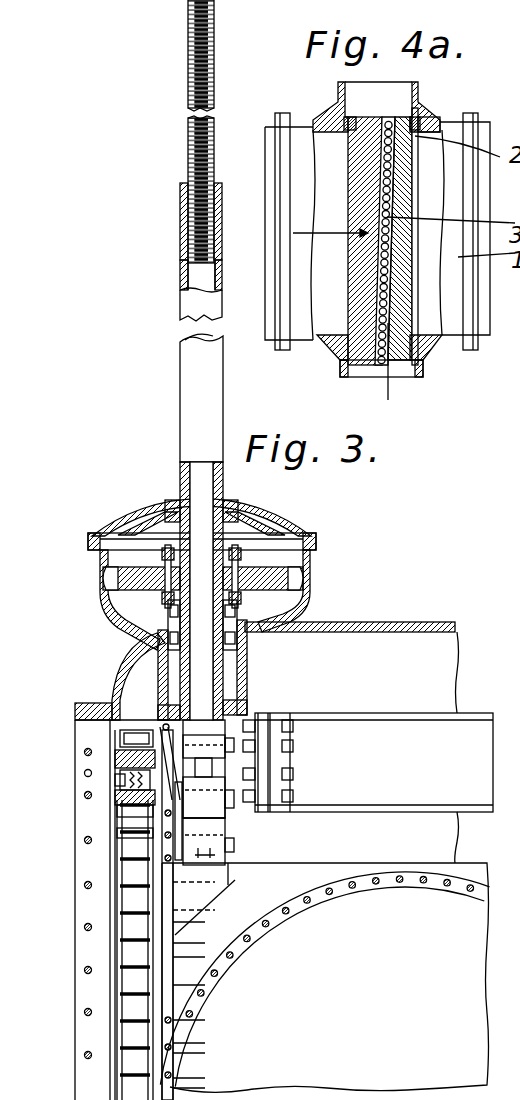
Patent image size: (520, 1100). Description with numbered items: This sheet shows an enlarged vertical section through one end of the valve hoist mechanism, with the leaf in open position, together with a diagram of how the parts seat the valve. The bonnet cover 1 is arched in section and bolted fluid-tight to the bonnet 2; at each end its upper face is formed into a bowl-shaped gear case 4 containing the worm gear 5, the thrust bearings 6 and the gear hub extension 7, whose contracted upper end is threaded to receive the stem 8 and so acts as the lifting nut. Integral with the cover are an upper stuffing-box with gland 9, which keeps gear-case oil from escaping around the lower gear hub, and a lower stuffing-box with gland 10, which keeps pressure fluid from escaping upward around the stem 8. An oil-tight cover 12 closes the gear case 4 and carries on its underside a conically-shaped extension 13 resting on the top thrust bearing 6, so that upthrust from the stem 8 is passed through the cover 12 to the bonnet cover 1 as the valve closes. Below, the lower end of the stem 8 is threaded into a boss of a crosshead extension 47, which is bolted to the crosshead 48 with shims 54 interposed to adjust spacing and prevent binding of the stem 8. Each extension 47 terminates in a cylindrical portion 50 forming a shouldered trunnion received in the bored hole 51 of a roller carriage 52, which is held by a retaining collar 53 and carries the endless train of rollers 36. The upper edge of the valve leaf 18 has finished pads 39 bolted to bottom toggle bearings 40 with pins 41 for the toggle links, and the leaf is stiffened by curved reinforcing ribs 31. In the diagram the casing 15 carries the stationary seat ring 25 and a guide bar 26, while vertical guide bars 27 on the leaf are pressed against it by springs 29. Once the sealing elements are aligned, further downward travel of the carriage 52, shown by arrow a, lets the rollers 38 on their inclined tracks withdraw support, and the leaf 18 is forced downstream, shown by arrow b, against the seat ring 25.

In FIG. 3, the bonnet cover 1 is at (362, 634).
In FIG. 3, the bonnet 2 is at (80, 872).
In FIG. 3, the gear case 4 is at (98, 573).
In FIG. 3, the worm gear 5 is at (300, 582).
In FIG. 3, the thrust bearings 6 is at (240, 562).
In FIG. 3, the gear hub extension 7 is at (180, 476).
In FIG. 3, the stem 8 is at (214, 158).
In FIG. 3, the gland 9 is at (135, 648).
In FIG. 3, the gland 10 is at (247, 682).
In FIG. 3, the oil-tight cover 12 is at (285, 512).
In FIG. 3, the conically-shaped extension 13 is at (313, 532).
In FIG. 3, the casing 15 is at (222, 215).
In FIG. 4a, the valve leaf 18 is at (345, 333).
In FIG. 3, the valve leaf 18 is at (345, 870).
In FIG. 4a, the stationary seat ring 25 is at (425, 133).
In FIG. 4a, the guide bar 26 is at (338, 120).
In FIG. 4a, the vertical guide bars 27 is at (344, 123).
In FIG. 4a, the springs 29 is at (395, 122).
In FIG. 3, the reinforcing ribs 31 is at (205, 1008).
In FIG. 3, the rollers 36 is at (130, 737).
In FIG. 4a, the rollers 38 is at (383, 355).
In FIG. 3, the rollers 38 is at (125, 830).
In FIG. 3, the finished pads 39 is at (215, 883).
In FIG. 3, the bottom toggle bearings 40 is at (215, 866).
In FIG. 3, the pins 41 is at (232, 838).
In FIG. 3, the crosshead extensions 47 is at (165, 745).
In FIG. 3, the crosshead 48 is at (398, 735).
In FIG. 3, the cylindrical portions 50 is at (108, 793).
In FIG. 3, the bored hole 51 is at (110, 772).
In FIG. 3, the roller carriages 52 is at (110, 753).
In FIG. 3, the retaining collars 53 is at (127, 810).
In FIG. 3, the shims 54 is at (275, 718).
In FIG. 4a, the arrow a is at (392, 378).
In FIG. 4a, the arrow b is at (330, 250).